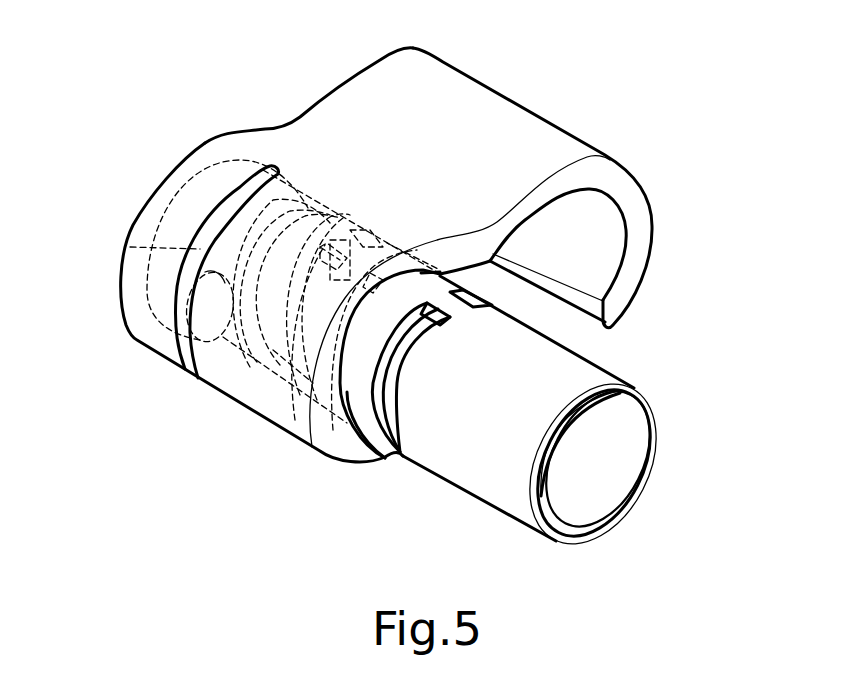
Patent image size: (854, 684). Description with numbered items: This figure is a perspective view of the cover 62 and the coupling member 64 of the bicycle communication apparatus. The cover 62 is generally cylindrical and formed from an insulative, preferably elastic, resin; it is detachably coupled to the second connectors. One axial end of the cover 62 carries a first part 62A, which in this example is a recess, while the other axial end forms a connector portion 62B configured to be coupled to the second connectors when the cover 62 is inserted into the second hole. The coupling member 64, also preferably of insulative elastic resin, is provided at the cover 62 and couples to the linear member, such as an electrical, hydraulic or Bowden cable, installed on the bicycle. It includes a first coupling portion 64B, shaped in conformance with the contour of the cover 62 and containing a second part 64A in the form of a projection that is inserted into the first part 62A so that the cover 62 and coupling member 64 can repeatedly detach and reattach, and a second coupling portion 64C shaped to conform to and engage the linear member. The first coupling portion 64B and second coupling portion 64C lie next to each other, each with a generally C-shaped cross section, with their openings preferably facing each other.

The cover 62 is at (470, 479).
The first part 62A is at (357, 199).
The connector portion 62B is at (657, 401).
The coupling member 64 is at (524, 118).
The second part 64A is at (130, 246).
The first coupling portion 64B is at (217, 152).
The second coupling portion 64C is at (444, 70).